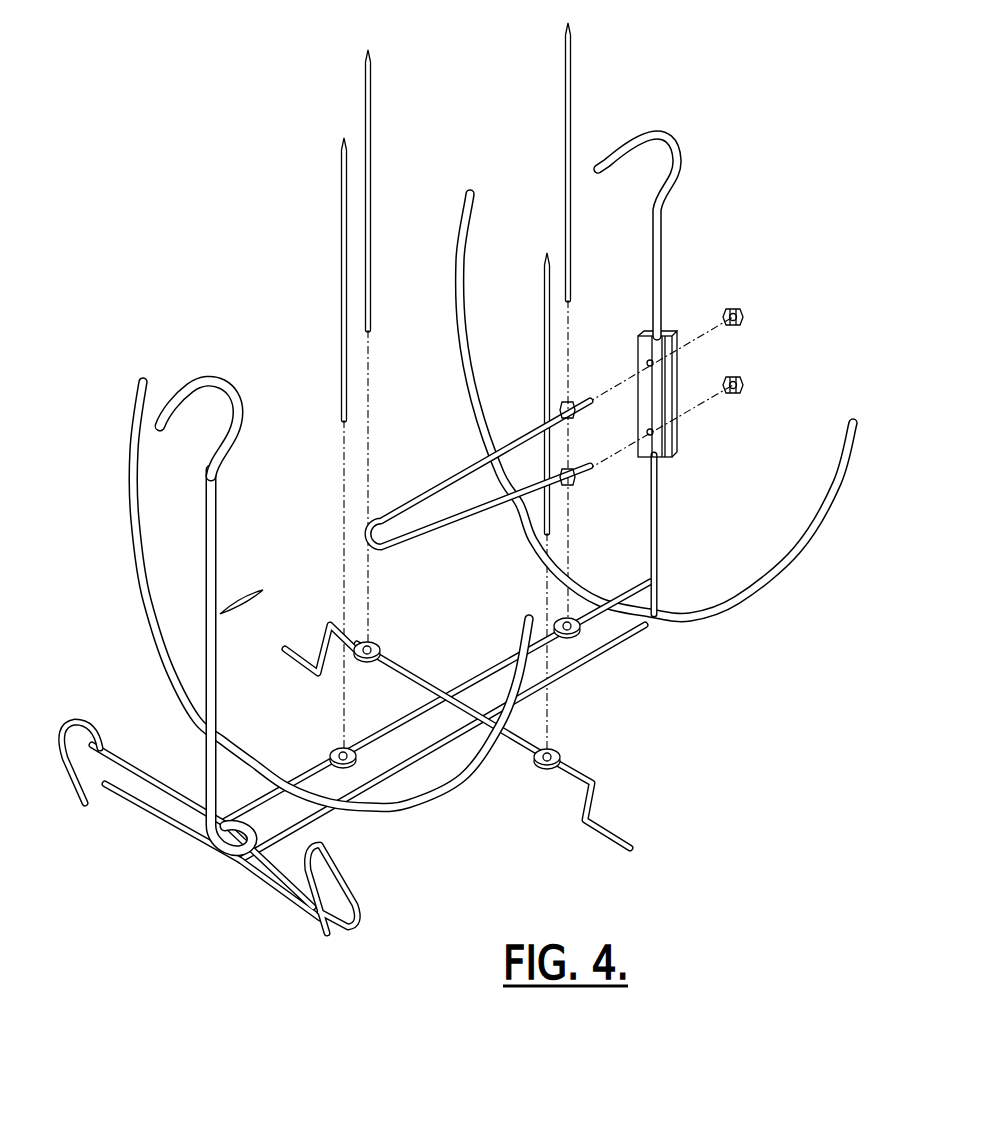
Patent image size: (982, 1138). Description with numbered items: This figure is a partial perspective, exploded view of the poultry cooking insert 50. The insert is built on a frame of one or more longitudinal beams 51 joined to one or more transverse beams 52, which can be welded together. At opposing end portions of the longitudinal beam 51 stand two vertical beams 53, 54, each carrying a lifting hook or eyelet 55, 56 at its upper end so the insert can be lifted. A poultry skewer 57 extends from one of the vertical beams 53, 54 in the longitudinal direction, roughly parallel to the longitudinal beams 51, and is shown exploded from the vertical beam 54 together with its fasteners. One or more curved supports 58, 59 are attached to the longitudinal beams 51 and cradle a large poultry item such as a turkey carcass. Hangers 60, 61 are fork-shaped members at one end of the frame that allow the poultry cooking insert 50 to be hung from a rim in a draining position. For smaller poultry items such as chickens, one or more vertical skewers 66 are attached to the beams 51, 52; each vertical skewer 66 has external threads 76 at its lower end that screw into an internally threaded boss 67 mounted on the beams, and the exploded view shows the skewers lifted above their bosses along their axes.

The poultry cooking insert 50 is at (729, 261).
The longitudinal beam 51 is at (406, 717).
The transverse beam 52 is at (433, 695).
The vertical beam 53 is at (218, 693).
The vertical beam 54 is at (661, 517).
The lifting hook or eyelet 55 is at (213, 381).
The lifting hook or eyelet 56 is at (670, 143).
The poultry skewer 57 is at (455, 468).
The curved support 58 is at (132, 527).
The curved support 59 is at (808, 557).
The hanger 60 is at (78, 802).
The hanger 61 is at (313, 907).
The vertical skewer 66 is at (372, 99).
The internally threaded boss 67 is at (560, 620).
The external threads 76 is at (372, 330).